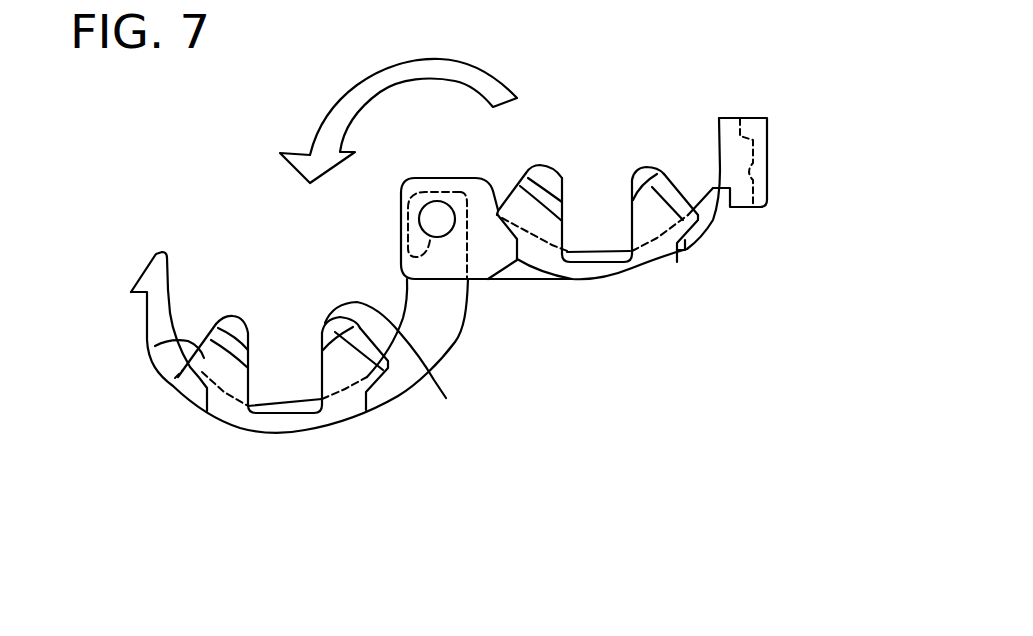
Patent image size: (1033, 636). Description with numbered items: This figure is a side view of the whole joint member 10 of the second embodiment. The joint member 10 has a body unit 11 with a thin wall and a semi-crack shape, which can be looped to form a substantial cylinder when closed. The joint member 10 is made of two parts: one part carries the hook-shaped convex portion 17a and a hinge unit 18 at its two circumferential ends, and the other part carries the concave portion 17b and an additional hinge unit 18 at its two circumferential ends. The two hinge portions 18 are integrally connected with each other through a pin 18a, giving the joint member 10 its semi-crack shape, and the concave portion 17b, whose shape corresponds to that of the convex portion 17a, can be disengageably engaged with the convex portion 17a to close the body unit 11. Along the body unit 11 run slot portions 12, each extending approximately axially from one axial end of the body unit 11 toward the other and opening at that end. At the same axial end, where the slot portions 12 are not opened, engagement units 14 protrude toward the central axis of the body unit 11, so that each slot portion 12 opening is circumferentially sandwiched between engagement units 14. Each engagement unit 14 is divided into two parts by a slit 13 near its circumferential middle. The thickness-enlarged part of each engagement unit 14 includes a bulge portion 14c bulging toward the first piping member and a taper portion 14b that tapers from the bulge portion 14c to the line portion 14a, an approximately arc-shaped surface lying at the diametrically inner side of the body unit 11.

The joint member 10 is at (206, 418).
The body unit 11 is at (450, 307).
The slot portion 12 is at (155, 346).
The slit 13 is at (321, 376).
The engagement unit 14 is at (343, 372).
The line portion 14a is at (404, 336).
The taper portion 14b is at (360, 380).
The bulge portion 14c is at (332, 355).
The convex portion 17a is at (141, 276).
The concave portion 17b is at (768, 181).
The hinge unit 18 is at (457, 203).
The pin 18a is at (433, 206).